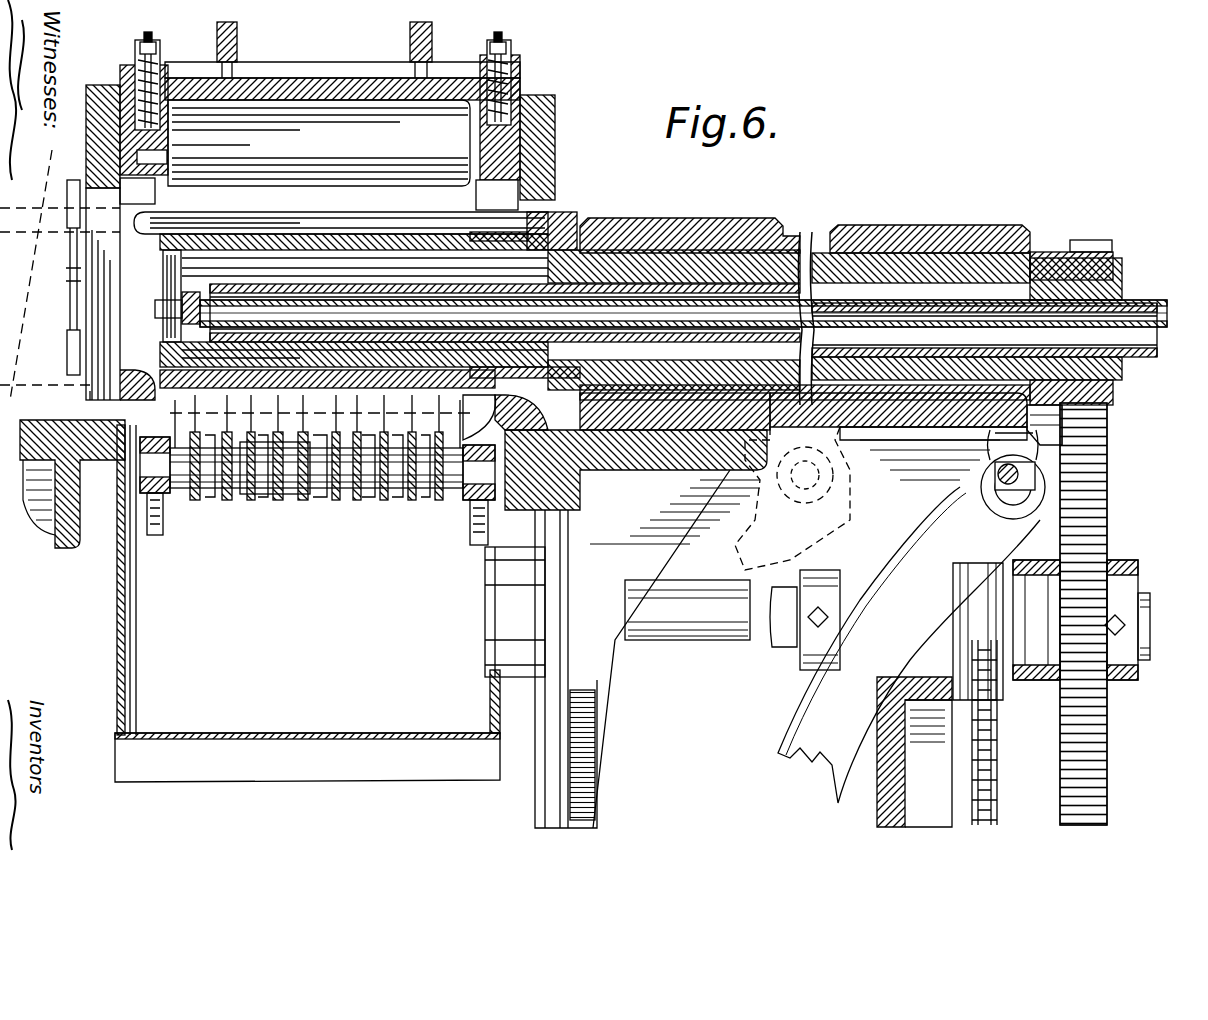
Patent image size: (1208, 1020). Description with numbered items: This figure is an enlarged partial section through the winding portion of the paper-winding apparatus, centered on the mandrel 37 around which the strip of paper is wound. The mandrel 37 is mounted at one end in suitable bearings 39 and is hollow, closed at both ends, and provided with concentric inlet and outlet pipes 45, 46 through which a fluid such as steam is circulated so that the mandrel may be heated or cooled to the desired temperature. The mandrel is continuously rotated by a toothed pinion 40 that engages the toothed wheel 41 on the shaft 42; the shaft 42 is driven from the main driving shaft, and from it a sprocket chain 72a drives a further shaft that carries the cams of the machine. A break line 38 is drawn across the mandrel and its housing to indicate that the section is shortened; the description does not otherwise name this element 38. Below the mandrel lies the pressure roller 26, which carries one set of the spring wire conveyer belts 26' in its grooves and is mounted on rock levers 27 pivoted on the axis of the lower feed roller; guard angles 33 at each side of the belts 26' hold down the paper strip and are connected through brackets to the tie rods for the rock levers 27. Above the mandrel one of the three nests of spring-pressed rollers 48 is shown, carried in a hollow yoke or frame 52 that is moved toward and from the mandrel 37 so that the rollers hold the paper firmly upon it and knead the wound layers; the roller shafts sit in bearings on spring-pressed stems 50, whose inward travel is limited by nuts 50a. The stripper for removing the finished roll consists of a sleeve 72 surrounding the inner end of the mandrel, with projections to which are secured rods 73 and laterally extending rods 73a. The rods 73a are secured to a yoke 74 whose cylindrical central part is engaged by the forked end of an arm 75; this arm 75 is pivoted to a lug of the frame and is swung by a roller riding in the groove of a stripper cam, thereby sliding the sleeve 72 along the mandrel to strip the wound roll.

The pressure roller 26 is at (316, 465).
The spring wire conveyer belts 26' is at (275, 488).
The rock levers 27 is at (155, 535).
The guard angles 33 is at (150, 437).
The mandrel 37 is at (350, 243).
The slot 38 is at (814, 245).
The bearings 39 is at (680, 228).
The toothed pinion 40 is at (1090, 245).
The toothed wheel 41 is at (1098, 535).
The shaft 42 is at (778, 642).
The inlet pipe 45 is at (1160, 333).
The outlet pipe 46 is at (1140, 312).
The nest of spring-pressed rollers 48 is at (314, 156).
The spring-pressed stems 50 is at (127, 78).
The nuts 50a is at (514, 46).
The hollow yoke or frame 52 is at (310, 96).
The sleeve 72 is at (478, 236).
The sprocket chain 72a is at (980, 826).
The rods 73 is at (406, 236).
The rods 73a is at (1000, 442).
The yoke 74 is at (1028, 468).
The arm 75 is at (911, 616).